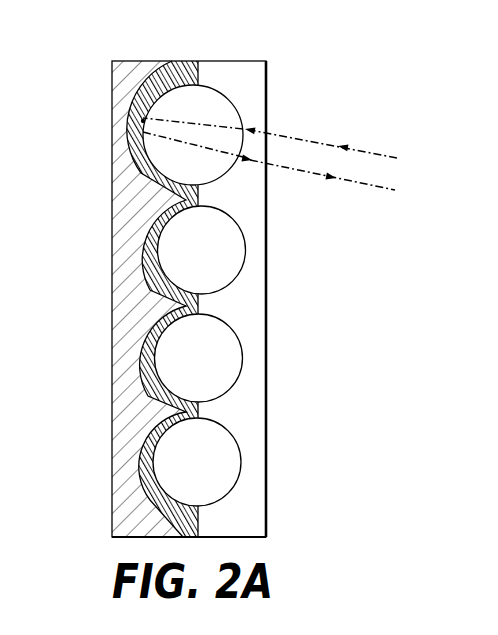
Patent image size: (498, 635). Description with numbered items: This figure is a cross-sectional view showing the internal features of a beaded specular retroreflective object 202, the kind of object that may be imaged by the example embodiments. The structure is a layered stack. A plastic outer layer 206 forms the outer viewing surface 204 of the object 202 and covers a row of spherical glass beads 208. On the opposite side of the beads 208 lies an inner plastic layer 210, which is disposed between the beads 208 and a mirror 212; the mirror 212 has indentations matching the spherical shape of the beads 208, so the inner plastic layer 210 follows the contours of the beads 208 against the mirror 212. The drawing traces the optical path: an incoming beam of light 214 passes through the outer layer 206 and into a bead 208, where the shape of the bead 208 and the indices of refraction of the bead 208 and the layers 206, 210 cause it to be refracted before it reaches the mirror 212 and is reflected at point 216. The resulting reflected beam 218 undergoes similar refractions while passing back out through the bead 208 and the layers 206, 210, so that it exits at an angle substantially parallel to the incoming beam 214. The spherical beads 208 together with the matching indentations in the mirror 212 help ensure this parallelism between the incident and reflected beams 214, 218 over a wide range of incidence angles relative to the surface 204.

The beaded specular retroreflective object 202 is at (212, 38).
The outer viewing surface 204 is at (266, 306).
The plastic outer layer 206 is at (250, 447).
The glass beads 208 is at (225, 103).
The inner plastic layer 210 is at (190, 408).
The mirror 212 is at (123, 515).
The incoming beam of light 214 is at (365, 150).
The reflection point 216 is at (143, 120).
The reflected beam 218 is at (365, 188).